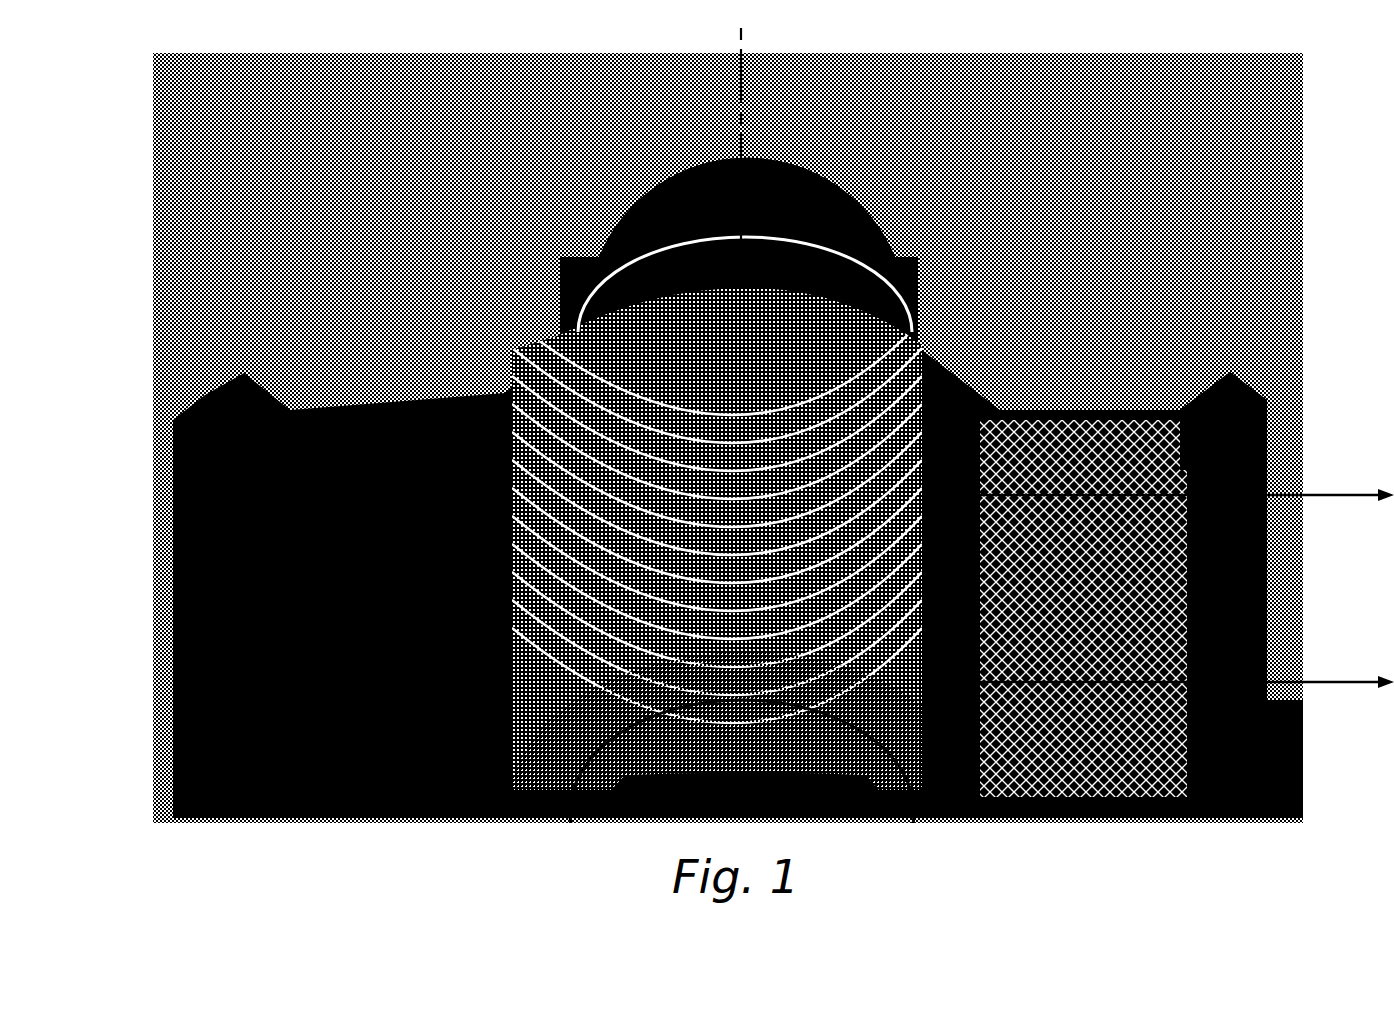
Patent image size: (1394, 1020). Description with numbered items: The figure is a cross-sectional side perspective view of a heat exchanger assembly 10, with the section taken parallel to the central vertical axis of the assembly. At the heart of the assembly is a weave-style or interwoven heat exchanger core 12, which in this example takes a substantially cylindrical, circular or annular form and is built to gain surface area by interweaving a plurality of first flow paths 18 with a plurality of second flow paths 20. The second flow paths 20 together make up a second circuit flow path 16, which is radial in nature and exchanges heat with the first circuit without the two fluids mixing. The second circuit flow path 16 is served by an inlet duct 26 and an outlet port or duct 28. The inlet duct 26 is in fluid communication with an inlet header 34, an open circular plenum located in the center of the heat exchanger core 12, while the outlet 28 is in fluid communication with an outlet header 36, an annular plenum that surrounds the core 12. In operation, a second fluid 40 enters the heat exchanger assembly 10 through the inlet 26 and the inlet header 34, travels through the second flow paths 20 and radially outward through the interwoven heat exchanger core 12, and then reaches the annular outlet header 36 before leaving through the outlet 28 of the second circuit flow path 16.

The heat exchanger assembly 10 is at (728, 514).
The heat exchanger core 12 is at (1085, 812).
The second circuit flow path 16 is at (1330, 496).
The first flow paths 18 is at (1030, 700).
The second flow paths 20 is at (657, 368).
The inlet duct 26 is at (588, 212).
The outlet port/duct 28 is at (1279, 468).
The inlet header 34 is at (690, 695).
The outlet header 36 is at (1229, 785).
The second fluid 40 is at (743, 113).